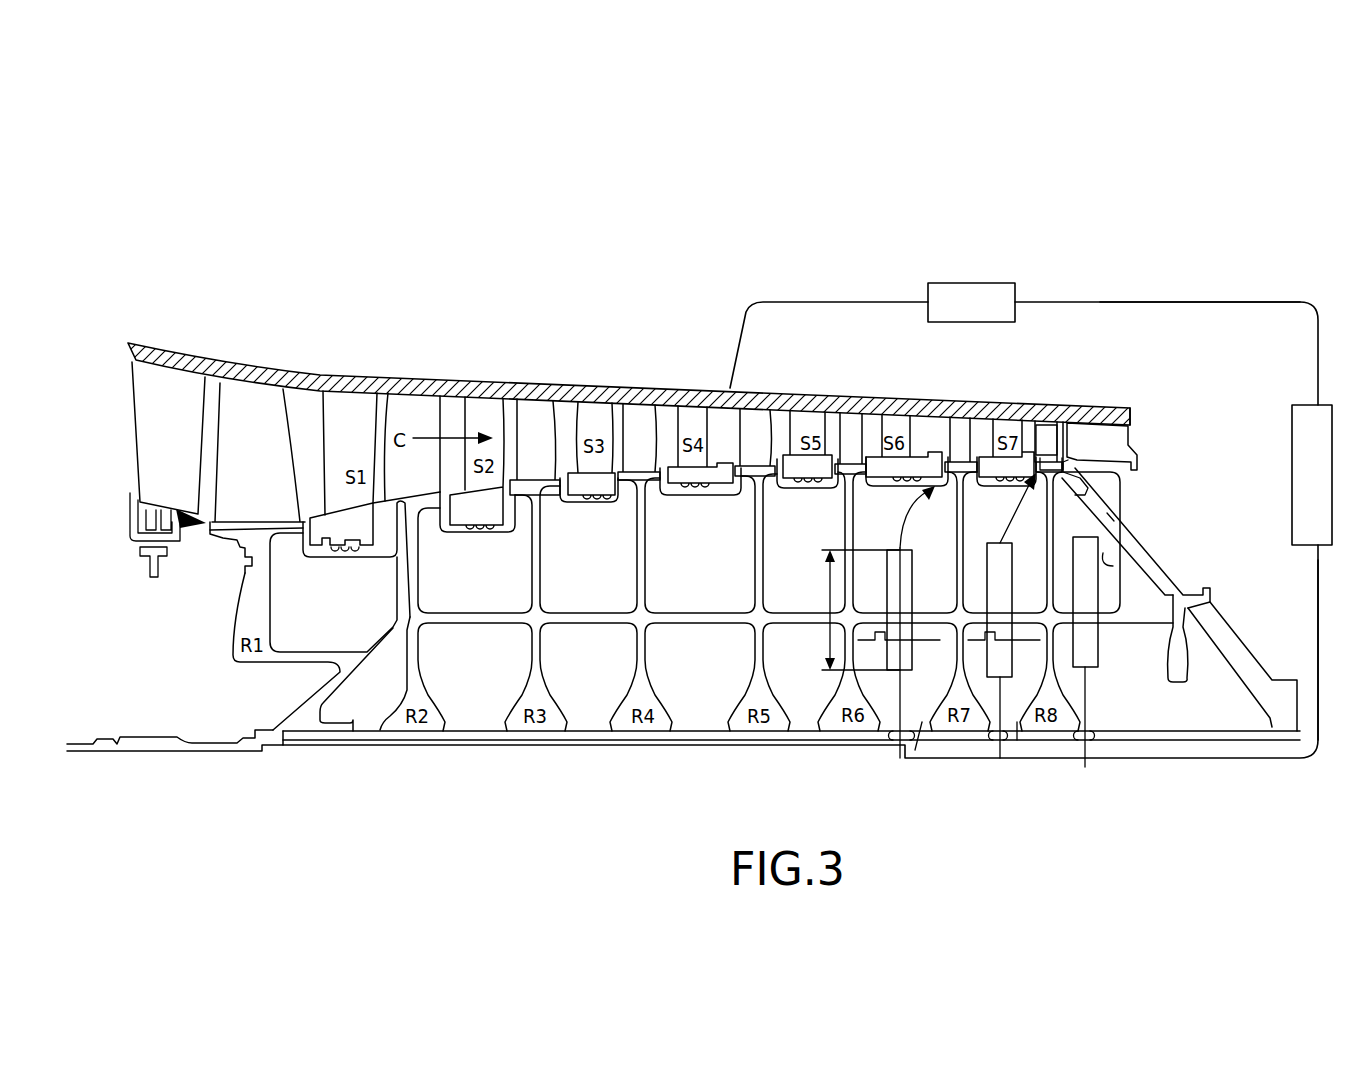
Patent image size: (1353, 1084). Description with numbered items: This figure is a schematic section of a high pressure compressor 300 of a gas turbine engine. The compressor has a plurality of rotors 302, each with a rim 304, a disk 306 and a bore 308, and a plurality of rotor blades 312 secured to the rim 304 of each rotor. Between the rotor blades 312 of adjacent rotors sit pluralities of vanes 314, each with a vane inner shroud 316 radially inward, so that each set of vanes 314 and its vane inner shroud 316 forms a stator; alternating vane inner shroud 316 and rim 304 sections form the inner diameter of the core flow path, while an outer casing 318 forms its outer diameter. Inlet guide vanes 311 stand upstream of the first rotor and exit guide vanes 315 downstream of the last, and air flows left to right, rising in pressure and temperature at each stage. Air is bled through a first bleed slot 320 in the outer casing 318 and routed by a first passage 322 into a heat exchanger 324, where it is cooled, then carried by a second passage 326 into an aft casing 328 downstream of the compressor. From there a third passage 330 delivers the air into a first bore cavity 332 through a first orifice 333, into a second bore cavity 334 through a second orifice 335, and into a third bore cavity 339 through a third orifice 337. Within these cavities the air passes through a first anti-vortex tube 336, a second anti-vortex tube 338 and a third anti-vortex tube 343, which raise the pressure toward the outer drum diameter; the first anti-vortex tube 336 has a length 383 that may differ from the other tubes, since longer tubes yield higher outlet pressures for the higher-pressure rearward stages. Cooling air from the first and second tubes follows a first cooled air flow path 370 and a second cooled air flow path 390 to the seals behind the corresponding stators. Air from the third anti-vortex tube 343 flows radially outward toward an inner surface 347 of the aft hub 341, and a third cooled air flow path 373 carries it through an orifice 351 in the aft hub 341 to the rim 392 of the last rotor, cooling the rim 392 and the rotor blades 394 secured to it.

The high pressure compressor 300 is at (290, 186).
The rotors 302 is at (606, 590).
The rim 304 is at (652, 481).
The disk 306 is at (647, 563).
The bore 308 is at (645, 696).
The inlet guide vanes 311 is at (186, 457).
The rotor blades 312 is at (274, 460).
The vanes 314 is at (374, 459).
The exit guide vanes 315 is at (1113, 441).
The vane inner shroud 316 is at (341, 556).
The outer casing 318 is at (1112, 403).
The first bleed slot 320 is at (720, 374).
The first passage 322 is at (778, 303).
The heat exchanger 324 is at (975, 283).
The second passage 326 is at (1113, 302).
The aft casing 328 is at (1292, 478).
The third passage 330 is at (1318, 617).
The first bore cavity 332 is at (922, 724).
The first orifice 333 is at (897, 742).
The second bore cavity 334 is at (1017, 724).
The second orifice 335 is at (995, 753).
The first anti-vortex tube 336 is at (913, 598).
The third orifice 337 is at (1085, 767).
The second anti-vortex tube 338 is at (1013, 587).
The third bore cavity 339 is at (1120, 724).
The aft hub 341 is at (1160, 580).
The third anti-vortex tube 343 is at (1098, 567).
The inner surface 347 is at (1107, 553).
The orifice 351 is at (1117, 513).
The first cooled air flow path 370 is at (915, 500).
The third cooled air flow path 373 is at (1090, 470).
The length 383 is at (830, 600).
The second cooled air flow path 390 is at (997, 525).
The rim 392 is at (1040, 468).
The rotor blades 394 is at (1060, 437).